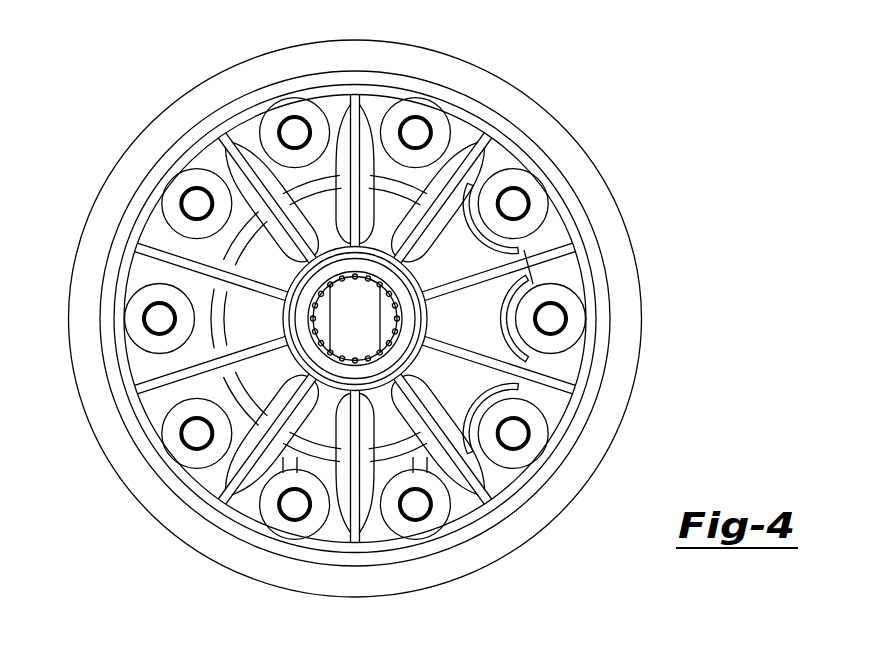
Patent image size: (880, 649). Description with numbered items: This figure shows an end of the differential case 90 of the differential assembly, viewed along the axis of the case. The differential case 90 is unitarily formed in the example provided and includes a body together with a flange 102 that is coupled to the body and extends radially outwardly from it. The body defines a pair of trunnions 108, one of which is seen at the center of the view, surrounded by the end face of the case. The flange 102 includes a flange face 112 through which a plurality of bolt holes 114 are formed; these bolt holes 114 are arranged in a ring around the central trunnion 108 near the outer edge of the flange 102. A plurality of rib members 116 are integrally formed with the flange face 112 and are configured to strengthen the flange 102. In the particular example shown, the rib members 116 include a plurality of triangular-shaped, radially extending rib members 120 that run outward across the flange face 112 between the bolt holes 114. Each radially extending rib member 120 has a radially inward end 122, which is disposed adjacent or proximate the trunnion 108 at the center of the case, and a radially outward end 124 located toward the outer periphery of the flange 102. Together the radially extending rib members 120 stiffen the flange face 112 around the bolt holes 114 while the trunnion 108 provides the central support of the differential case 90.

The differential case 90 is at (116, 486).
The flange 102 is at (153, 418).
The trunnion 108 is at (407, 315).
The flange face 112 is at (470, 517).
The bolt holes 114 is at (515, 203).
The rib members 116 is at (518, 397).
The radially extending rib members 120 is at (258, 193).
The radially inward end 122 is at (357, 250).
The radially outward end 124 is at (357, 95).